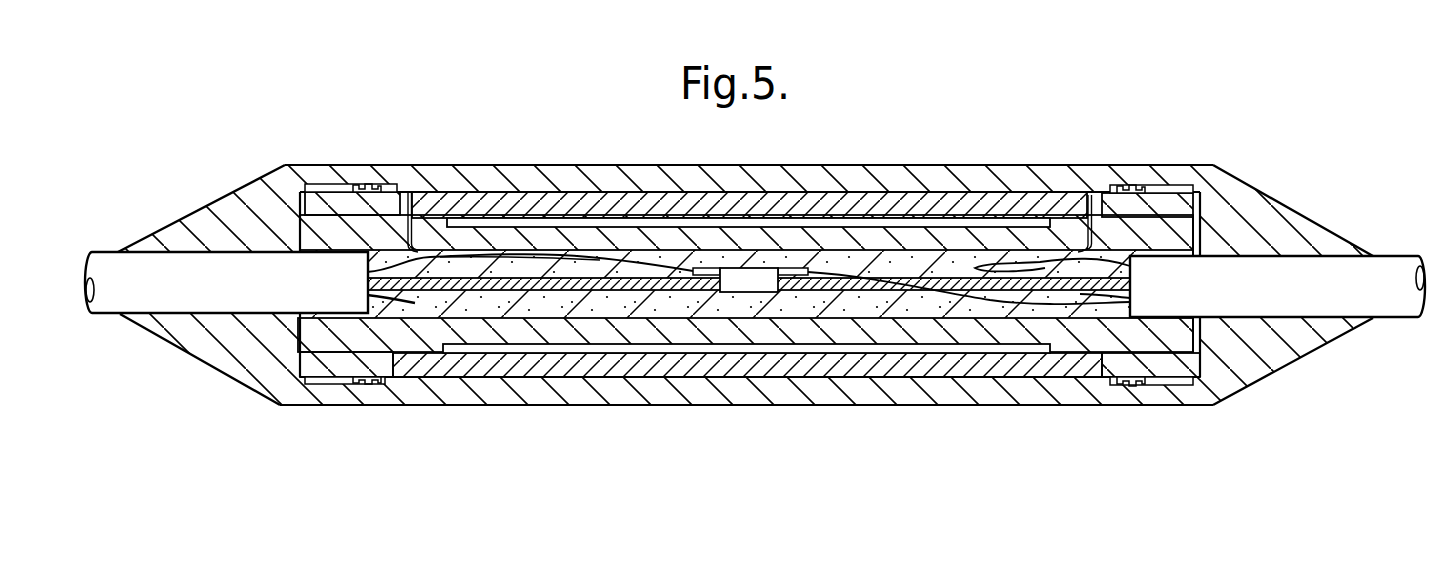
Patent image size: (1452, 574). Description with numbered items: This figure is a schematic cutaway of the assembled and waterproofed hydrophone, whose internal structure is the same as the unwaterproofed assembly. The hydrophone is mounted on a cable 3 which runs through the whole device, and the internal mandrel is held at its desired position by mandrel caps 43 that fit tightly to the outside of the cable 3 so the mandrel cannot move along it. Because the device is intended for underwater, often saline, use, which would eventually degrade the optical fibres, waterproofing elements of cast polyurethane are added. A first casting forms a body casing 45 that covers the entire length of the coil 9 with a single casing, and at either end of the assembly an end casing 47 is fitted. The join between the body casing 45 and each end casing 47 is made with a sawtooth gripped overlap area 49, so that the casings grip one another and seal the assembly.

The cable 3 is at (111, 251).
The coil 9 is at (665, 190).
The mandrel caps 43 is at (298, 222).
The body casing 45 is at (536, 164).
The end casing 47 is at (193, 213).
The sawtooth gripped overlap area 49 is at (362, 189).